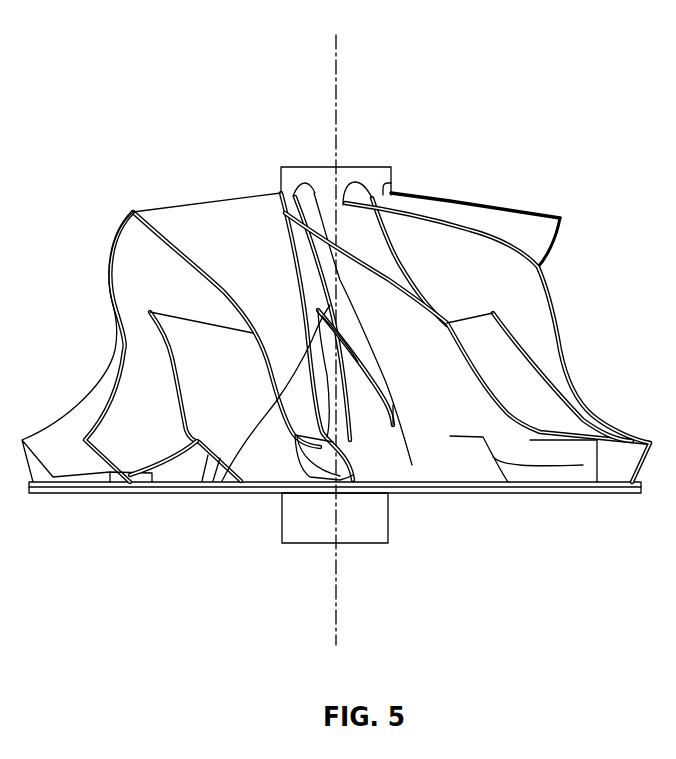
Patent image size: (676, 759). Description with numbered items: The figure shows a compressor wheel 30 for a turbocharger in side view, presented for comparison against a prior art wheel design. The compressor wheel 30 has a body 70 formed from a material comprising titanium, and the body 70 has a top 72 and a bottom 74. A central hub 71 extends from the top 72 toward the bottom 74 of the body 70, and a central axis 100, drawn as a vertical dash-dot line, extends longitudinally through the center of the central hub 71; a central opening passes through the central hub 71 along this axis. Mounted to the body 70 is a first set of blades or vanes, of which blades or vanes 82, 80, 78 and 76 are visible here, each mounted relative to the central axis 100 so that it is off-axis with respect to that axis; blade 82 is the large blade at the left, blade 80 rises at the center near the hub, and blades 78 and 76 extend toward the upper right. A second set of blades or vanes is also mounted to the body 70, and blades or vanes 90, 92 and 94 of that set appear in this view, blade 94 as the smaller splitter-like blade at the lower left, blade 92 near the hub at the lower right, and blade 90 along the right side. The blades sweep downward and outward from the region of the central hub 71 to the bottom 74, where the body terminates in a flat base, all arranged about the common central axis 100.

The compressor wheel 30 is at (430, 108).
The body 70 is at (393, 172).
The central hub 71 is at (358, 167).
The top 72 is at (275, 178).
The bottom 74 is at (150, 493).
The blade or vane 76 is at (522, 210).
The blade or vane 78 is at (465, 203).
The blade or vane 80 is at (318, 194).
The blade or vane 82 is at (236, 240).
The blade or vane 90 is at (548, 352).
The blade or vane 92 is at (412, 455).
The blade or vane 94 is at (168, 357).
The central axis 100 is at (337, 62).